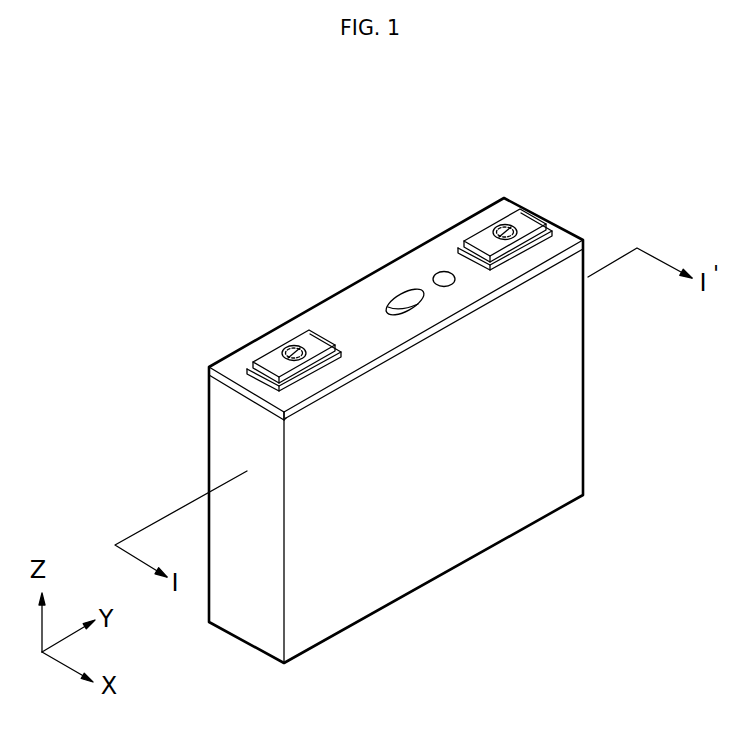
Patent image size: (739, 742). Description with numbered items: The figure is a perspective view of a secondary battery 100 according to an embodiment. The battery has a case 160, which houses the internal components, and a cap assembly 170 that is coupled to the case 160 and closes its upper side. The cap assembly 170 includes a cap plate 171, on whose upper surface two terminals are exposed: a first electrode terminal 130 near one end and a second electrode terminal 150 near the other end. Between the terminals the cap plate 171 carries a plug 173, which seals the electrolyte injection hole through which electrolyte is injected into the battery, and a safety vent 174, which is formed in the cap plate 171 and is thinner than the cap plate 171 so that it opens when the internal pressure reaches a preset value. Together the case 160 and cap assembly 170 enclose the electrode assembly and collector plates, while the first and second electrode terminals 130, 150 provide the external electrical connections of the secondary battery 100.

The secondary battery 100 is at (587, 210).
The first electrode terminal 130 is at (263, 353).
The second electrode terminal 150 is at (498, 218).
The case 160 is at (563, 375).
The cap assembly 170 is at (290, 318).
The cap plate 171 is at (350, 308).
The plug 173 is at (440, 275).
The safety vent 174 is at (400, 302).